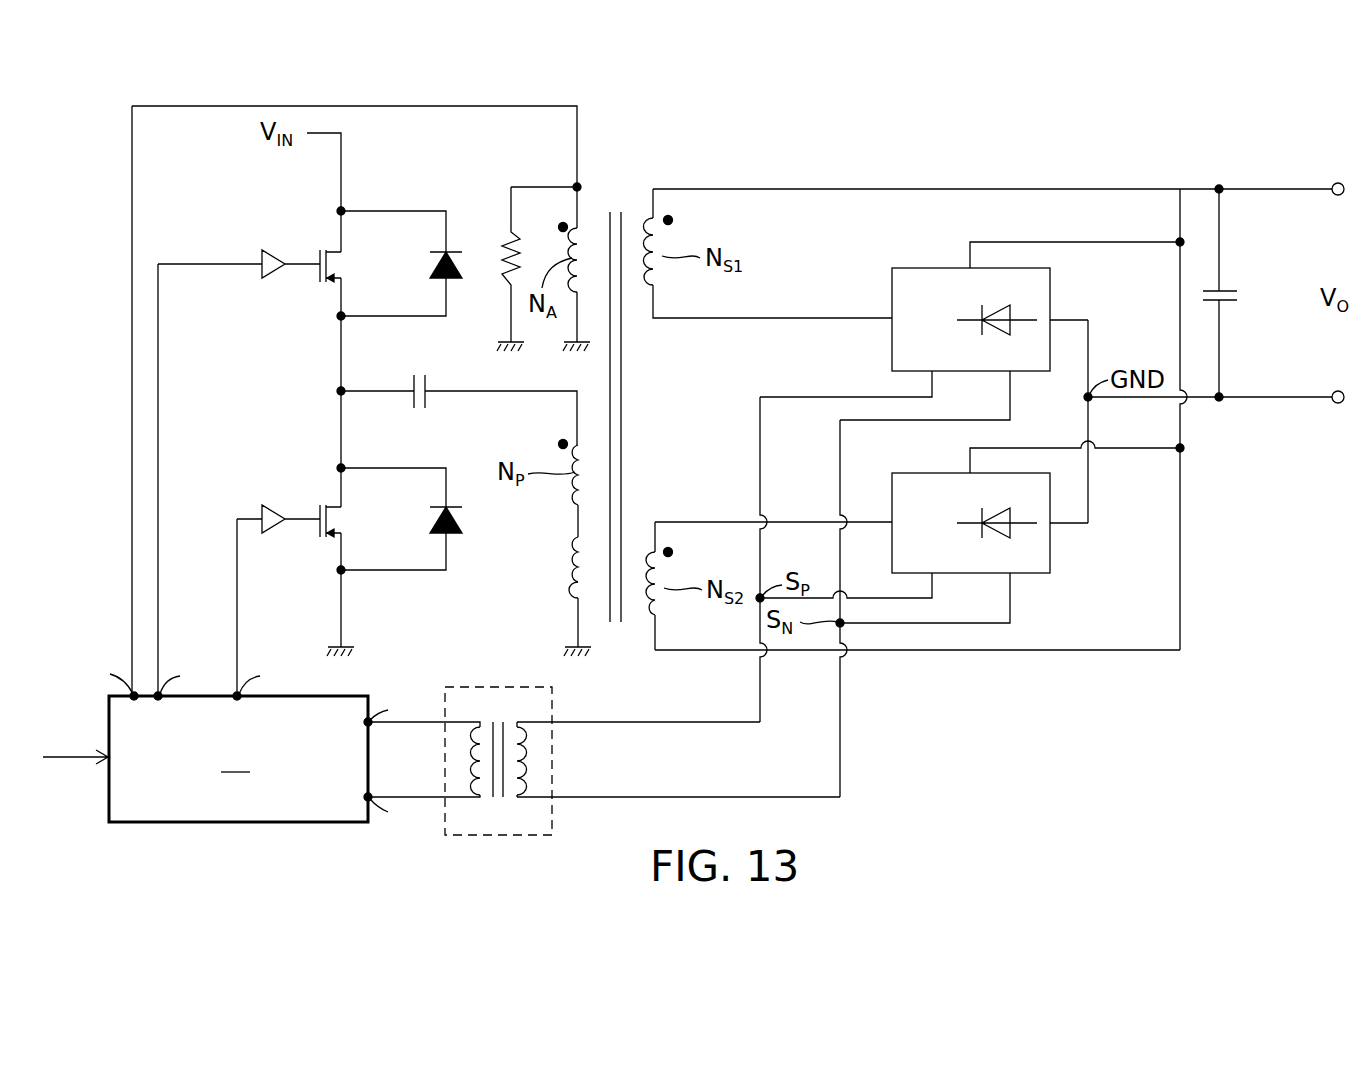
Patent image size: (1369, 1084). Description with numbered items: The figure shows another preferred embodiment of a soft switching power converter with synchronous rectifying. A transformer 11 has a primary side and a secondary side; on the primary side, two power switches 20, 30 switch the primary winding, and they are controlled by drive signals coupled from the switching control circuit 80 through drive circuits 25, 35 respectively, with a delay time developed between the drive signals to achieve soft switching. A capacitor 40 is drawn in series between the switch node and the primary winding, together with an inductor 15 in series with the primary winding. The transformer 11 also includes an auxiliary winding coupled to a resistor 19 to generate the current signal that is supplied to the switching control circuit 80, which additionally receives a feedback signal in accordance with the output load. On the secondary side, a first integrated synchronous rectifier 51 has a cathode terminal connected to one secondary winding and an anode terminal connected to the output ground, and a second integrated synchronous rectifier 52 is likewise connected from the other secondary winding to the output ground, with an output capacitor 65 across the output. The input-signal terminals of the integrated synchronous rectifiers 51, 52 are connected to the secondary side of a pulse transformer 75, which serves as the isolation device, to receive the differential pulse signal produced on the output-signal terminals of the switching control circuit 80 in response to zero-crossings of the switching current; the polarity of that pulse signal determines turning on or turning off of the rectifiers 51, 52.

The transformer 11 is at (612, 210).
The inductor 15 is at (575, 565).
The resistor 19 is at (500, 262).
The power switch 20 is at (345, 268).
The drive circuit 25 is at (278, 252).
The power switch 30 is at (345, 520).
The drive circuit 35 is at (278, 506).
The resonant capacitor 40 is at (425, 381).
The first integrated synchronous rectifier 51 is at (932, 268).
The second integrated synchronous rectifier 52 is at (932, 473).
The output capacitor 65 is at (1238, 296).
The pulse transformer 75 is at (490, 687).
The switching control circuit 80 is at (231, 745).